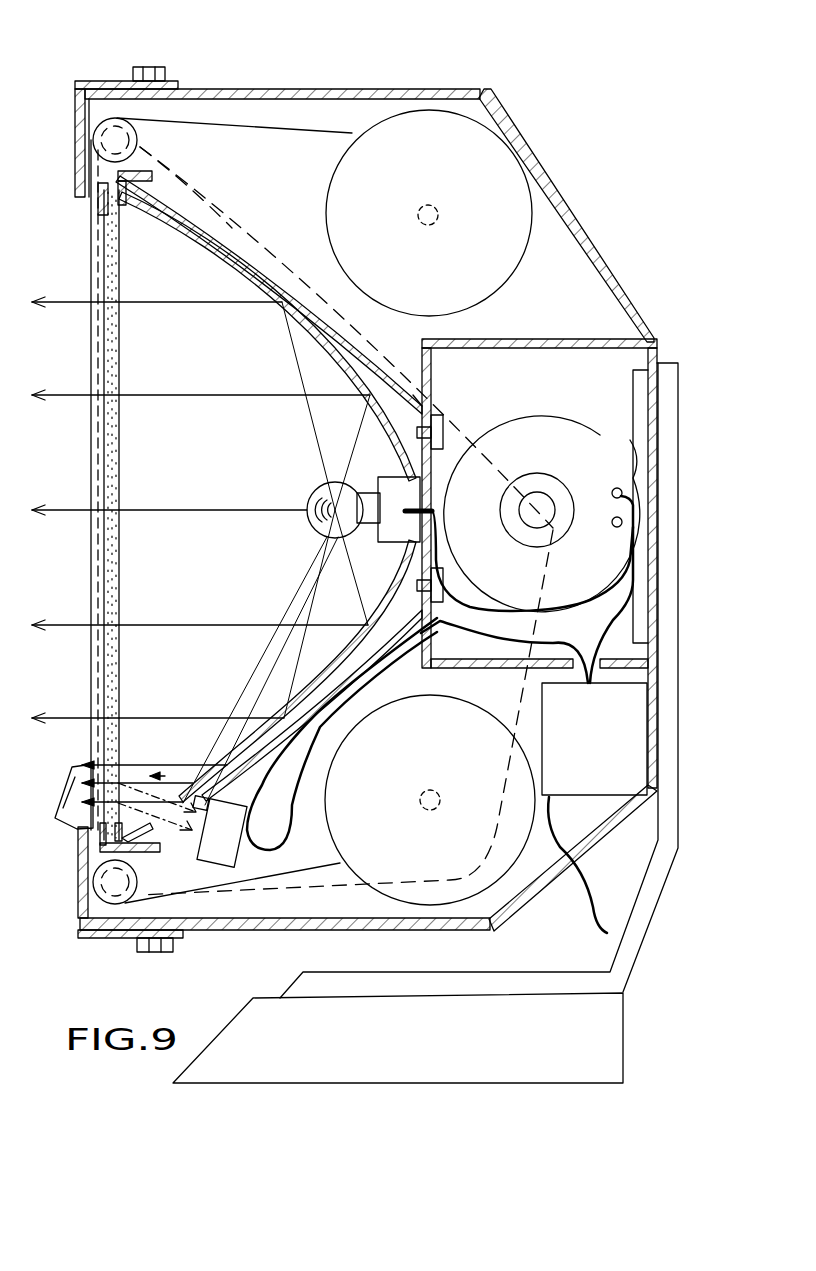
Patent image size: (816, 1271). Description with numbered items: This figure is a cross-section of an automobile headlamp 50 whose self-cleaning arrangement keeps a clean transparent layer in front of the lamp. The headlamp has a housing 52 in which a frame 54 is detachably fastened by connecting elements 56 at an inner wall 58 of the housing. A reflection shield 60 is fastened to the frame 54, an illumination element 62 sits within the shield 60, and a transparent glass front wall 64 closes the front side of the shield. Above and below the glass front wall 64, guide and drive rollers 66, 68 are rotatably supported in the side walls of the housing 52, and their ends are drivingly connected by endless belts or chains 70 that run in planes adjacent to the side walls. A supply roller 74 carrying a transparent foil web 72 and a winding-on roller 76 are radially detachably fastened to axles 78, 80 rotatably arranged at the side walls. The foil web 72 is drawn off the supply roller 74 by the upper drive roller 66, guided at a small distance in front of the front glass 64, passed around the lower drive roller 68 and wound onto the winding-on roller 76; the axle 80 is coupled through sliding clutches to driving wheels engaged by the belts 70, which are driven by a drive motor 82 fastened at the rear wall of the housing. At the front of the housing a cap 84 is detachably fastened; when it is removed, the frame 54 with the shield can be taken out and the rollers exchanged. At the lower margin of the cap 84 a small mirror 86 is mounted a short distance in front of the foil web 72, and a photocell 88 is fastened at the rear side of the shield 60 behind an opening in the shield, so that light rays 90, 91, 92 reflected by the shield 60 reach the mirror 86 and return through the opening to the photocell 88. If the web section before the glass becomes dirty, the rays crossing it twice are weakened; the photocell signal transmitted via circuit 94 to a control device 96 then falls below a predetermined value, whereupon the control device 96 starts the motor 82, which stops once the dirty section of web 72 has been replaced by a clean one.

The housing 50 is at (318, 110).
The housing 52 is at (573, 213).
The frame 54 is at (228, 233).
The connecting elements 56 is at (440, 433).
The inner wall 58 is at (417, 363).
The reflection shield 60 is at (208, 240).
The illumination element 62 is at (318, 492).
The transparent glass front wall 64 is at (118, 342).
The upper guide and drive roller 66 is at (110, 138).
The lower guide and drive roller 68 is at (115, 893).
The endless belts or chains 70 is at (205, 196).
The transparent foil web 72 is at (330, 135).
The supply roller 74 is at (487, 165).
The winding-on roller 76 is at (352, 816).
The axle 78 is at (418, 215).
The axle 80 is at (432, 790).
The drive motor 82 is at (555, 450).
The cap 84 is at (97, 75).
The mirror 86 is at (78, 768).
The photocell 88 is at (226, 865).
The light ray 90 is at (203, 768).
The light ray 91 is at (245, 704).
The light ray 92 is at (266, 683).
The circuit 94 is at (385, 665).
The control device 96 is at (580, 738).